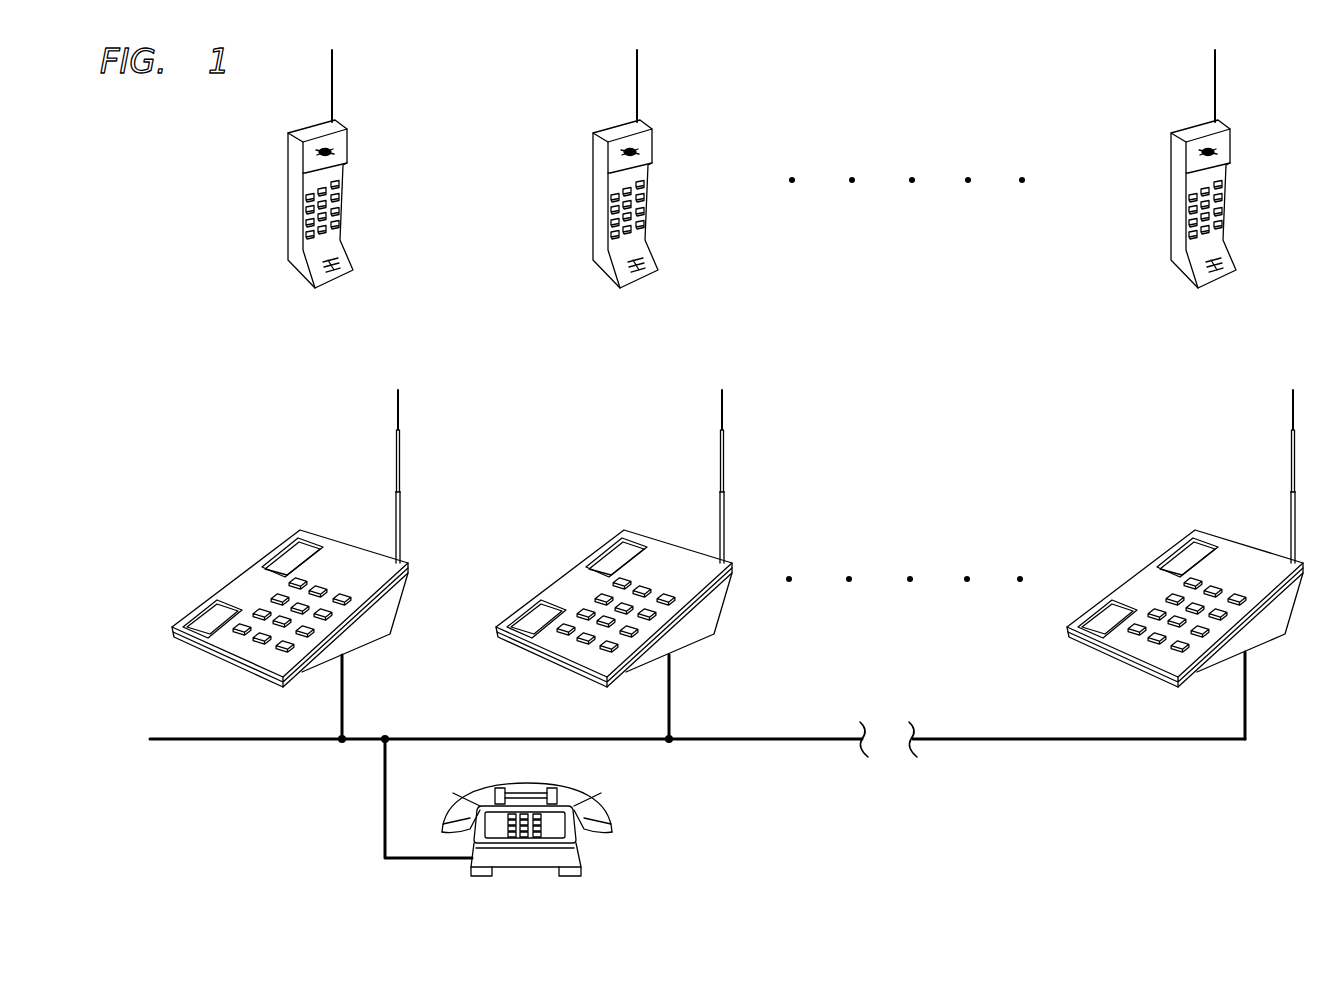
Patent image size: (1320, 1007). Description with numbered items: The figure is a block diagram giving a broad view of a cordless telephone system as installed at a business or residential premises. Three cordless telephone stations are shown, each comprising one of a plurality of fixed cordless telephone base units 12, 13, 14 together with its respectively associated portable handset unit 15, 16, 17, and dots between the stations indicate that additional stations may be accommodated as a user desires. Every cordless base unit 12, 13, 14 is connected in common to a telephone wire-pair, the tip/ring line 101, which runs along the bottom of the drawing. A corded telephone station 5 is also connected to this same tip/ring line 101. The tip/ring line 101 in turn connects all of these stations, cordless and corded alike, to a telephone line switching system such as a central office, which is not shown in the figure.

The corded telephone station 5 is at (617, 817).
The cordless telephone base unit 12 is at (268, 558).
The cordless telephone base unit 13 is at (593, 558).
The cordless telephone base unit 14 is at (1174, 557).
The portable handset unit 15 is at (347, 150).
The portable handset unit 16 is at (652, 154).
The portable handset unit 17 is at (1230, 150).
The tip/ring line 101 is at (200, 738).